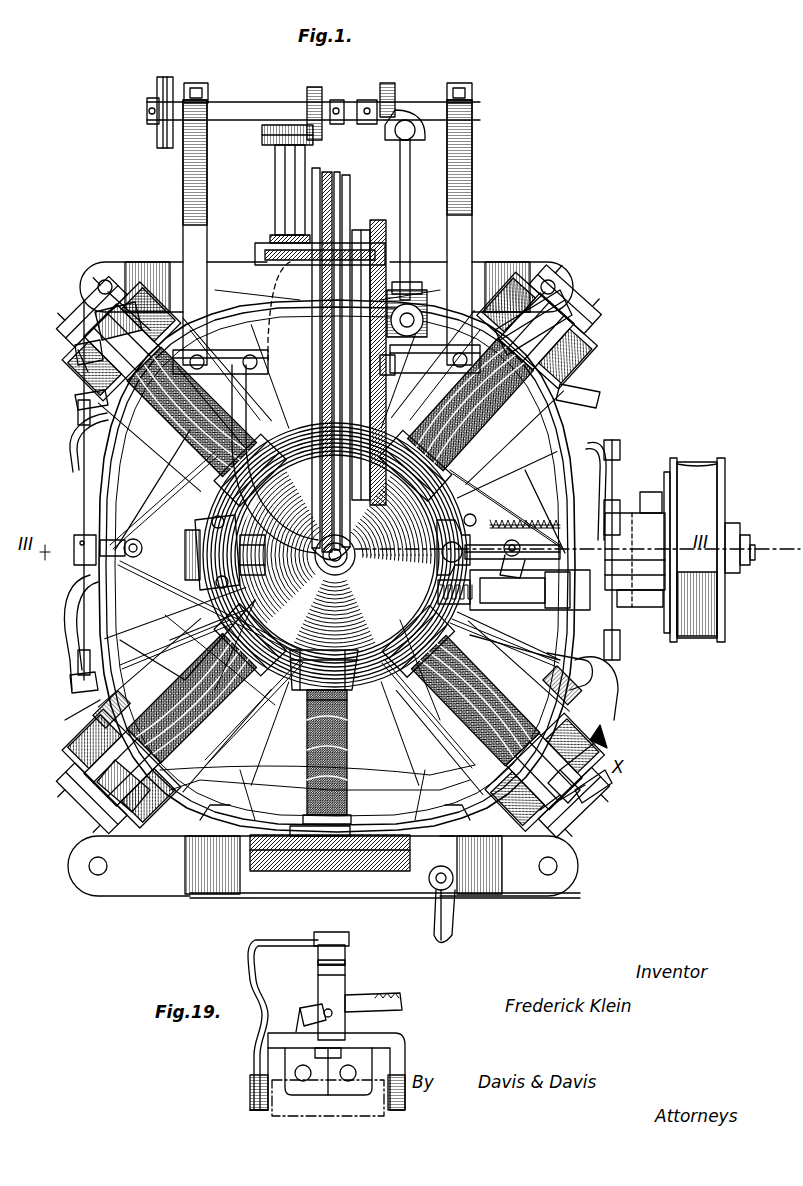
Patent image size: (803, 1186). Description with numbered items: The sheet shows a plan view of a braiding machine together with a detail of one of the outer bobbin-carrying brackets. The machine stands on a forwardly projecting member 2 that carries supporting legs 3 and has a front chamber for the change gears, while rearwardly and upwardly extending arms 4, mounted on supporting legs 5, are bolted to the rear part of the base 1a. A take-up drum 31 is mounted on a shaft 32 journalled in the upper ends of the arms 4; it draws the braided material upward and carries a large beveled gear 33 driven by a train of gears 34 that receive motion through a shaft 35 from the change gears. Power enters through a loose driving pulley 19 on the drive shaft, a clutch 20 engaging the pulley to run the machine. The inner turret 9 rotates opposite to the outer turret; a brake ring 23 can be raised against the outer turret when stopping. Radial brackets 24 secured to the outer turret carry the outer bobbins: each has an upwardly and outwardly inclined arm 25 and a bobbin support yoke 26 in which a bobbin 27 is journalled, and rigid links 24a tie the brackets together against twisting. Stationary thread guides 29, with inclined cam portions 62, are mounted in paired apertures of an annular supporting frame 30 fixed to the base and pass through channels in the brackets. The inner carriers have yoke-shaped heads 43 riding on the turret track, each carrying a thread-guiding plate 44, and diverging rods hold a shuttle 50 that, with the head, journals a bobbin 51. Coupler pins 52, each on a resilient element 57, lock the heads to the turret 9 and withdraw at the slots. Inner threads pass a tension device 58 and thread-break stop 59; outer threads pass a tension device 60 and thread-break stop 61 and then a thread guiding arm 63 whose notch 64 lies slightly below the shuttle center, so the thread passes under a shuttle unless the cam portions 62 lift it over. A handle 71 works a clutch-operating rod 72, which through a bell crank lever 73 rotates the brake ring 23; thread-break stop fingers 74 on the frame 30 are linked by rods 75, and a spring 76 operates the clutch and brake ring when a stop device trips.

In FIG. 1, the rear part of the base 1a is at (500, 468).
In FIG. 1, the forwardly projecting member 2 is at (383, 897).
In FIG. 1, the supporting legs 3 is at (95, 882).
In FIG. 1, the rearwardly and upwardly extending arms 4 is at (183, 208).
In FIG. 1, the supporting legs 5 is at (108, 272).
In FIG. 1, the turret 9 is at (331, 555).
In FIG. 1, the driving pulley 19 is at (700, 470).
In FIG. 1, the clutch 20 is at (672, 500).
In FIG. 1, the brake ring 23 is at (452, 545).
In FIG. 19, the radial brackets 24 is at (343, 1088).
In FIG. 1, the rigid links 24a is at (600, 400).
In FIG. 1, the upwardly and outwardly inclined arm 25 is at (95, 320).
In FIG. 19, the upwardly and outwardly inclined arm 25 is at (345, 995).
In FIG. 1, the bobbin support yoke 26 is at (75, 400).
In FIG. 19, the bobbin support yoke 26 is at (250, 1072).
In FIG. 1, the bobbins 27 is at (600, 740).
In FIG. 19, the bobbins 27 is at (312, 1105).
In FIG. 1, the stationary thread guides 29 is at (70, 440).
In FIG. 1, the annular supporting frame 30 is at (82, 489).
In FIG. 1, the take-up drum 31 is at (341, 176).
In FIG. 1, the shaft 32 is at (250, 395).
In FIG. 1, the large beveled gear 33 is at (378, 220).
In FIG. 1, the train of gears 34 is at (392, 100).
In FIG. 1, the shaft 35 is at (280, 202).
In FIG. 1, the heads 43 is at (195, 528).
In FIG. 1, the thread-guiding plate 44 is at (245, 575).
In FIG. 1, the shuttle 50 is at (580, 690).
In FIG. 1, the bobbin 51 is at (560, 360).
In FIG. 1, the coupler pins 52 is at (200, 625).
In FIG. 1, the resilient element 57 is at (131, 543).
In FIG. 1, the tension device 58 is at (590, 668).
In FIG. 1, the thread-break stop 59 is at (560, 655).
In FIG. 1, the tension device 60 is at (600, 785).
In FIG. 1, the thread-break stop 61 is at (583, 800).
In FIG. 19, the thread-break stop 61 is at (305, 1008).
In FIG. 1, the inclined cam portions 62 is at (600, 498).
In FIG. 1, the thread guiding arm 63 is at (548, 808).
In FIG. 19, the thread guiding arm 63 is at (272, 942).
In FIG. 19, the notch 64 is at (258, 1018).
In FIG. 1, the handle 71 is at (456, 930).
In FIG. 1, the clutch-operating rod 72 is at (512, 600).
In FIG. 1, the bell crank lever 73 is at (470, 540).
In FIG. 1, the thread-break stop fingers 74 is at (118, 540).
In FIG. 1, the rods 75 is at (160, 526).
In FIG. 1, the spring 76 is at (522, 530).